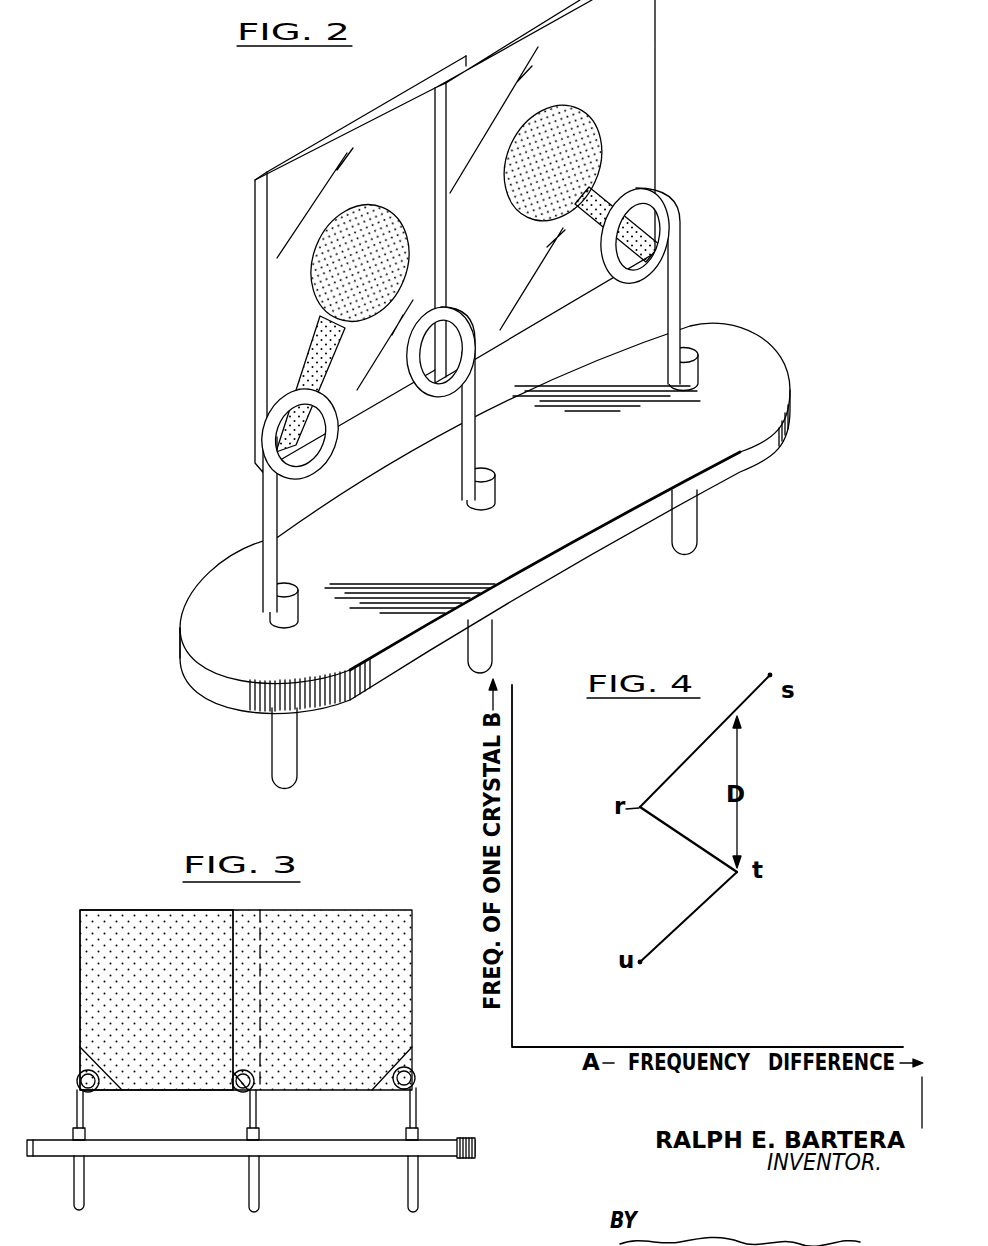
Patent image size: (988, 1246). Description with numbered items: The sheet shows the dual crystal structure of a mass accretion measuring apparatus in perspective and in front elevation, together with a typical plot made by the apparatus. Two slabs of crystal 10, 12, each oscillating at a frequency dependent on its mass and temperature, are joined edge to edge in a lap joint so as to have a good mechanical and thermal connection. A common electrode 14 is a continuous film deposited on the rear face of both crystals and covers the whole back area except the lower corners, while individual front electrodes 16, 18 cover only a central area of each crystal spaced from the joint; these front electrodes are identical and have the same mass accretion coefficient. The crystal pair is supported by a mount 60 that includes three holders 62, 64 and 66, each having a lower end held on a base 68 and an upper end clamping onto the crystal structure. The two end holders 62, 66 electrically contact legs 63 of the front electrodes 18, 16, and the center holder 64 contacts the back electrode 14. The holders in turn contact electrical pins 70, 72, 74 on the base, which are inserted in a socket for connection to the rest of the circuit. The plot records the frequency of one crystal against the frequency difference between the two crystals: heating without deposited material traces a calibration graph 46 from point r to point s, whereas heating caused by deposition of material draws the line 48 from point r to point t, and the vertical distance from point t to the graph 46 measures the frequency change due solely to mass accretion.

In FIG. 2, the crystal slab 10 is at (450, 238).
In FIG. 3, the crystal slab 10 is at (240, 1000).
In FIG. 2, the crystal slab 12 is at (252, 180).
In FIG. 3, the crystal slab 12 is at (413, 985).
In FIG. 2, the common electrode 14 is at (346, 121).
In FIG. 3, the common electrode 14 is at (180, 982).
In FIG. 2, the individual front electrode 16 is at (594, 136).
In FIG. 2, the individual front electrode 18 is at (314, 278).
In FIG. 4, the calibration graph 46 is at (691, 757).
In FIG. 4, the line 48 is at (699, 853).
In FIG. 2, the mount 60 is at (198, 586).
In FIG. 3, the mount 60 is at (478, 1147).
In FIG. 2, the end holder 62 is at (266, 517).
In FIG. 3, the end holder 62 is at (417, 1112).
In FIG. 2, the electrode legs 63 is at (298, 383).
In FIG. 3, the electrode legs 63 is at (246, 1079).
In FIG. 2, the center holder 64 is at (475, 385).
In FIG. 3, the center holder 64 is at (257, 1112).
In FIG. 2, the end holder 66 is at (679, 286).
In FIG. 3, the end holder 66 is at (84, 1112).
In FIG. 2, the base 68 is at (180, 641).
In FIG. 3, the base 68 is at (452, 1146).
In FIG. 2, the electrical pin 70 is at (296, 776).
In FIG. 3, the electrical pin 70 is at (410, 1188).
In FIG. 2, the electrical pin 72 is at (496, 655).
In FIG. 3, the electrical pin 72 is at (259, 1184).
In FIG. 2, the electrical pin 74 is at (699, 522).
In FIG. 3, the electrical pin 74 is at (85, 1184).